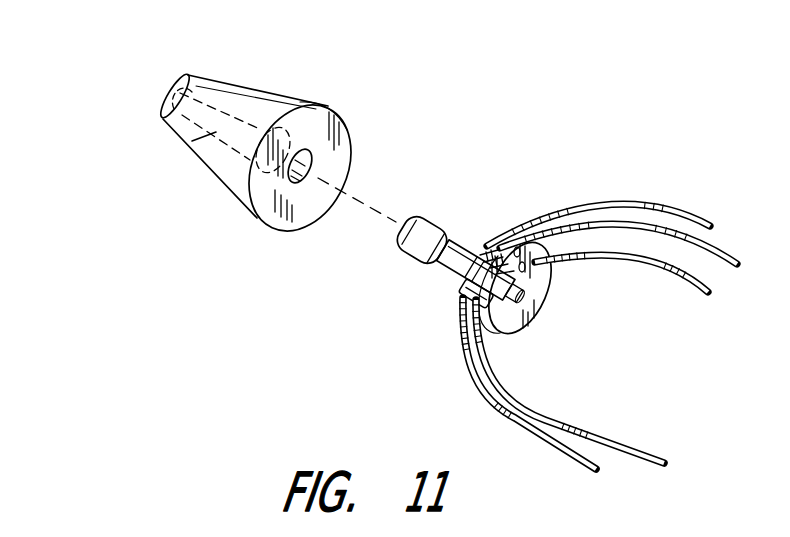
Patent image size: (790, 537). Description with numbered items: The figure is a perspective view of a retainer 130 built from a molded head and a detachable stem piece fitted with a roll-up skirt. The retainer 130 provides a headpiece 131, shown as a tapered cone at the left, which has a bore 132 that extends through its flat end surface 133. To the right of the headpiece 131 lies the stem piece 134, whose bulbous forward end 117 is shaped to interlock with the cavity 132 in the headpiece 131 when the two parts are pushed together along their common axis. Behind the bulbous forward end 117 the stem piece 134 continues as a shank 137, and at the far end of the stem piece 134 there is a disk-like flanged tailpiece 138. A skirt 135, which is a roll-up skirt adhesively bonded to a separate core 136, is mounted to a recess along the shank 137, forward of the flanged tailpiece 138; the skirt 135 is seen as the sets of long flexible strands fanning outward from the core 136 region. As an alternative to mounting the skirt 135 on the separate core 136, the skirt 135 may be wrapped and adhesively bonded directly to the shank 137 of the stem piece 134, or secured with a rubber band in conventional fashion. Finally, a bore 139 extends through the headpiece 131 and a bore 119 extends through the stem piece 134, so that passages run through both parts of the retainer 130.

The retainer 130 is at (250, 298).
The headpiece 131 is at (255, 88).
The bore 132 is at (312, 166).
The flat end surface 133 is at (320, 110).
The stem piece 134 is at (445, 200).
The skirt 135 is at (507, 378).
The core 136 is at (492, 247).
The shank 137 is at (452, 273).
The flanged tailpiece 138 is at (547, 290).
The bore 139 is at (190, 142).
The bulbous forward end 117 is at (410, 257).
The bore 119 is at (554, 264).